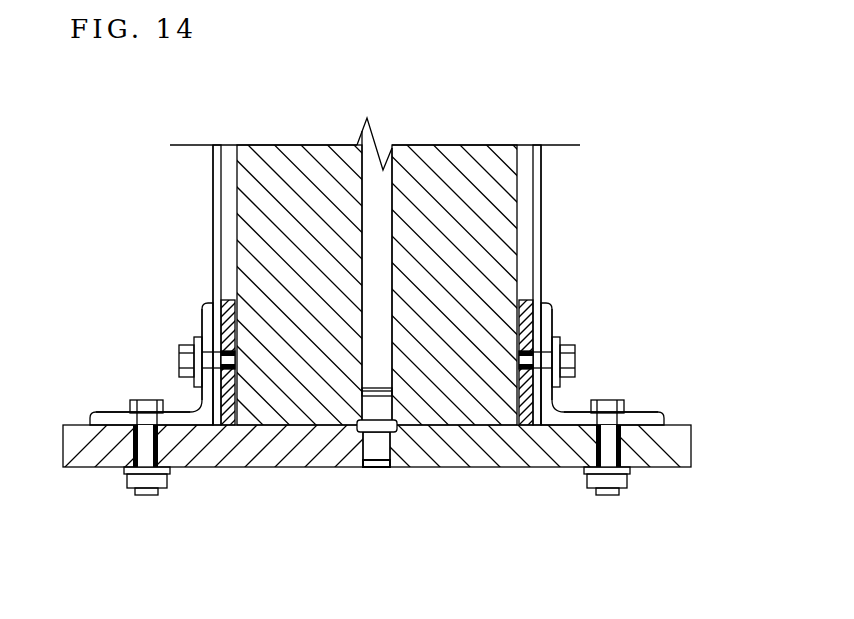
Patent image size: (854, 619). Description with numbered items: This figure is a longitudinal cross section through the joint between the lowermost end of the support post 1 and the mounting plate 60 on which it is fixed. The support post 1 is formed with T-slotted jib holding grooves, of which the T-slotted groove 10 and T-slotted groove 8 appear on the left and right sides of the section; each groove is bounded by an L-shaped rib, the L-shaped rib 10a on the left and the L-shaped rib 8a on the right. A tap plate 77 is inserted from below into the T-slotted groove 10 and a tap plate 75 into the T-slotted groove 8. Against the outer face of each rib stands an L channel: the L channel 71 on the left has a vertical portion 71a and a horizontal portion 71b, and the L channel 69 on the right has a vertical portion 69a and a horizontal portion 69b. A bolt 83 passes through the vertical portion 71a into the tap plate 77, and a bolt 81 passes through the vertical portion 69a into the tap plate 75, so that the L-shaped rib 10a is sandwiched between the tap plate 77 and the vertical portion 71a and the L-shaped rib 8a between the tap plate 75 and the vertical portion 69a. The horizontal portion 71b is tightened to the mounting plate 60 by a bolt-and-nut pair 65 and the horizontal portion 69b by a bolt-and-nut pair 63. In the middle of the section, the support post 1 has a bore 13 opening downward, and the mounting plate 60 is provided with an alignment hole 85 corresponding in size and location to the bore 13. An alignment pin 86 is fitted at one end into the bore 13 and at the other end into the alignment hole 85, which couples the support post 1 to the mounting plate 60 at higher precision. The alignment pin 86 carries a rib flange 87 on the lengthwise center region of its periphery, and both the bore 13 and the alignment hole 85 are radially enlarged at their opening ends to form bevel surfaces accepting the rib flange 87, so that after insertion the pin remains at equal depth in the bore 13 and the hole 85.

The support post 1 is at (466, 159).
The T-slotted groove 8 is at (523, 202).
The L-shaped rib 8a is at (540, 173).
The T-slotted groove 10 is at (223, 208).
The L-shaped rib 10a is at (210, 170).
The bore 13 is at (377, 283).
The mounting plate 60 is at (248, 452).
The bolt-and-nut pair 63 is at (629, 430).
The bolt-and-nut pair 65 is at (116, 433).
The L channel 69 is at (553, 412).
The vertical portion of L channel 69a is at (550, 325).
The horizontal portion of L channel 69b is at (653, 423).
The L channel 71 is at (203, 417).
The vertical portion of L channel 71a is at (205, 320).
The horizontal portion of L channel 71b is at (95, 420).
The tap plate 75 is at (525, 318).
The tap plate 77 is at (222, 305).
The bolt 81 is at (570, 360).
The bolt 83 is at (178, 358).
The alignment hole 85 is at (382, 467).
The alignment pin 86 is at (354, 476).
The rib flange 87 is at (412, 470).